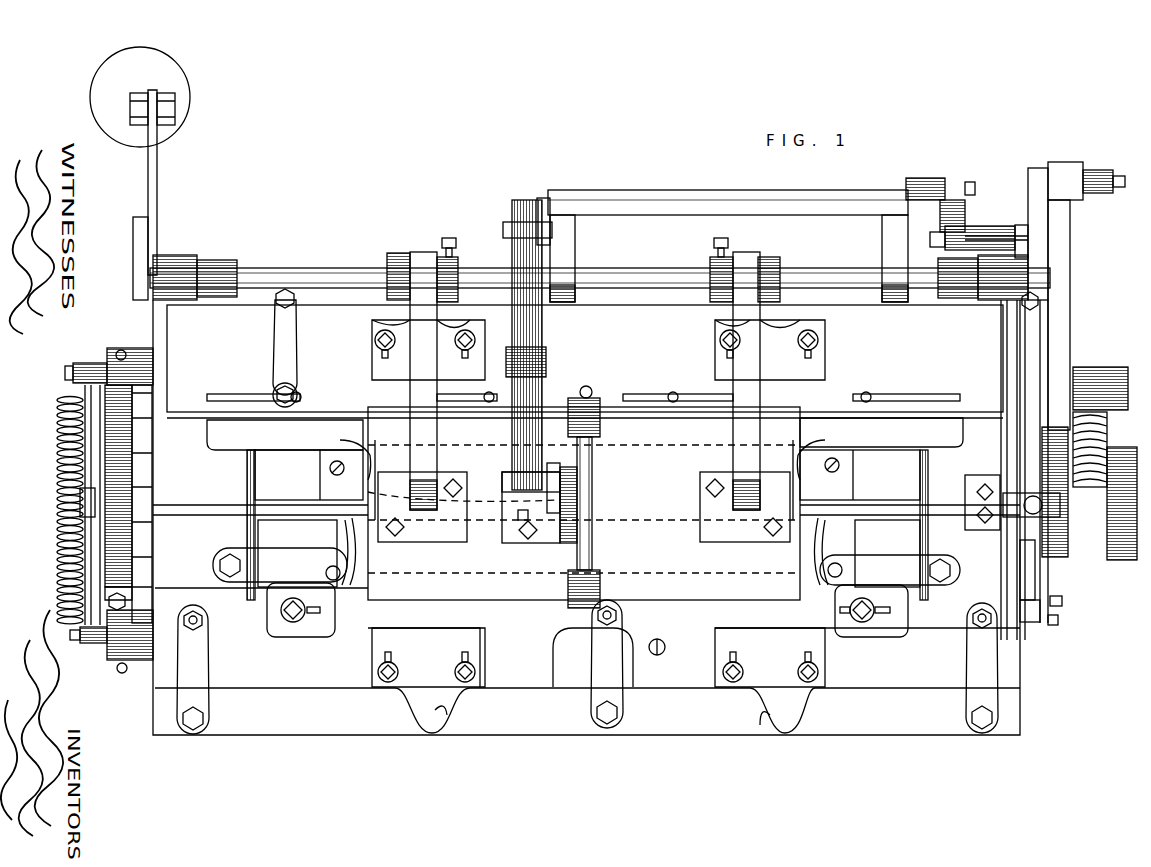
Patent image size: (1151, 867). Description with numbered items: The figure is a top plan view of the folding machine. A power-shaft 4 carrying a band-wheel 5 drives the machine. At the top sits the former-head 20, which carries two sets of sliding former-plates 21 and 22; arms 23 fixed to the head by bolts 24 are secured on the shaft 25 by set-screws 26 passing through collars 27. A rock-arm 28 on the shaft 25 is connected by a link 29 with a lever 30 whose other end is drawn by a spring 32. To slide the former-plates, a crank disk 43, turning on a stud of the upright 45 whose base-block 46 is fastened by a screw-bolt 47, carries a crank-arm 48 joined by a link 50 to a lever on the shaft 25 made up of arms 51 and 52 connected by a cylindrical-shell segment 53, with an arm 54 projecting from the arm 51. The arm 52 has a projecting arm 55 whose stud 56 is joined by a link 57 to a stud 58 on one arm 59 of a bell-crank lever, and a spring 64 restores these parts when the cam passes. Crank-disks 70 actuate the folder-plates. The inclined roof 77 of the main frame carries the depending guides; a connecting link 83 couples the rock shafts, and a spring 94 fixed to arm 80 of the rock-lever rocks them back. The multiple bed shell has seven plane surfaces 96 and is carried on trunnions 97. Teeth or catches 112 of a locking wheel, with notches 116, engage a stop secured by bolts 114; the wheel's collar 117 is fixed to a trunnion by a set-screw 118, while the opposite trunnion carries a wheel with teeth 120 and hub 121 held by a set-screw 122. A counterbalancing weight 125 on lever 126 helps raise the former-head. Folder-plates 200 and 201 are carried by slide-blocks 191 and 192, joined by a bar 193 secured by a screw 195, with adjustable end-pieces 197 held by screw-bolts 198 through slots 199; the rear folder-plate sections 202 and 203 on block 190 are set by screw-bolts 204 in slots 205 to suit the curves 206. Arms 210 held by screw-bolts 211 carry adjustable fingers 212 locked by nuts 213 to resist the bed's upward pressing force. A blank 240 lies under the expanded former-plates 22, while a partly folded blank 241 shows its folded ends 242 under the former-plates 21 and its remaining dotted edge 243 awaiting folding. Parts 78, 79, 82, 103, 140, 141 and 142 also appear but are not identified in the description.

The power-shaft 4 is at (1070, 530).
The band-wheel 5 is at (1108, 555).
The former-head 20 is at (393, 412).
The former-plates 21 is at (338, 475).
The former-plates 22 is at (382, 543).
The arms 23 is at (585, 381).
The bolts 24 is at (406, 527).
The shaft 25 is at (280, 268).
The set-screws 26 is at (450, 238).
The collars 27 is at (460, 262).
The rock-arm 28 is at (1038, 168).
The link 29 is at (1095, 172).
The lever 30 is at (1062, 222).
The spring 32 is at (1110, 440).
The crank disk 43 is at (562, 540).
The upright 45 is at (530, 522).
The base-block 46 is at (505, 540).
The screw-bolt 47 is at (526, 540).
The crank-arm 48 is at (556, 463).
The link 50 is at (548, 362).
The arm 51 is at (565, 305).
The arm 52 is at (895, 305).
The segment 53 is at (690, 195).
The arm 54 is at (540, 205).
The projecting arm 55 is at (908, 190).
The stud 56 is at (977, 188).
The link 57 is at (967, 218).
The stud 58 is at (936, 246).
The arm of bell-crank lever 59 is at (1020, 226).
The spring 64 is at (1015, 240).
The crank-disks 70 is at (460, 720).
The inclined roof 77 is at (600, 517).
The lower bracket 78 is at (113, 633).
The screw 79 is at (122, 673).
The arm 80 is at (112, 362).
The screw 82 is at (122, 350).
The connecting link 83 is at (63, 517).
The spring 94 is at (57, 455).
The plane surfaces 96 is at (323, 515).
The trunnions 97 is at (250, 480).
The rail 103 is at (258, 508).
The teeth or catches 112 is at (1022, 602).
The bolts 114 is at (987, 486).
The notch or groove 116 is at (1025, 580).
The collar 117 is at (1062, 605).
The set-screw 118 is at (1054, 625).
The teeth 120 is at (140, 518).
The hub 121 is at (107, 532).
The set-screw 122 is at (147, 587).
The counterbalancing weight 125 is at (172, 98).
The lever 126 is at (158, 170).
The block 140 is at (600, 420).
The link 141 is at (592, 470).
The link 142 is at (592, 556).
The folder-block 190 is at (585, 361).
The slide-block 191 is at (297, 680).
The slide-block 192 is at (897, 680).
The bar 193 is at (582, 650).
The screw 195 is at (666, 649).
The end-pieces 197 is at (270, 625).
The screw-bolts 198 is at (293, 622).
The slot 199 is at (318, 615).
The folder-plate 200 is at (830, 548).
The folder-plate 201 is at (345, 532).
The folder-plate section 202 is at (290, 450).
The folder-plate section 203 is at (893, 447).
The screw-bolts 204 is at (302, 392).
The slots 205 is at (233, 392).
The curves 206 is at (358, 445).
The arms 210 is at (298, 341).
The screw-bolts 211 is at (278, 306).
The adjustable finger 212 is at (281, 406).
The locking-nuts 213 is at (293, 388).
The blank 240 is at (368, 588).
The blank 241 is at (372, 455).
The folded ends 242 is at (350, 440).
The straight edge 243 is at (670, 447).